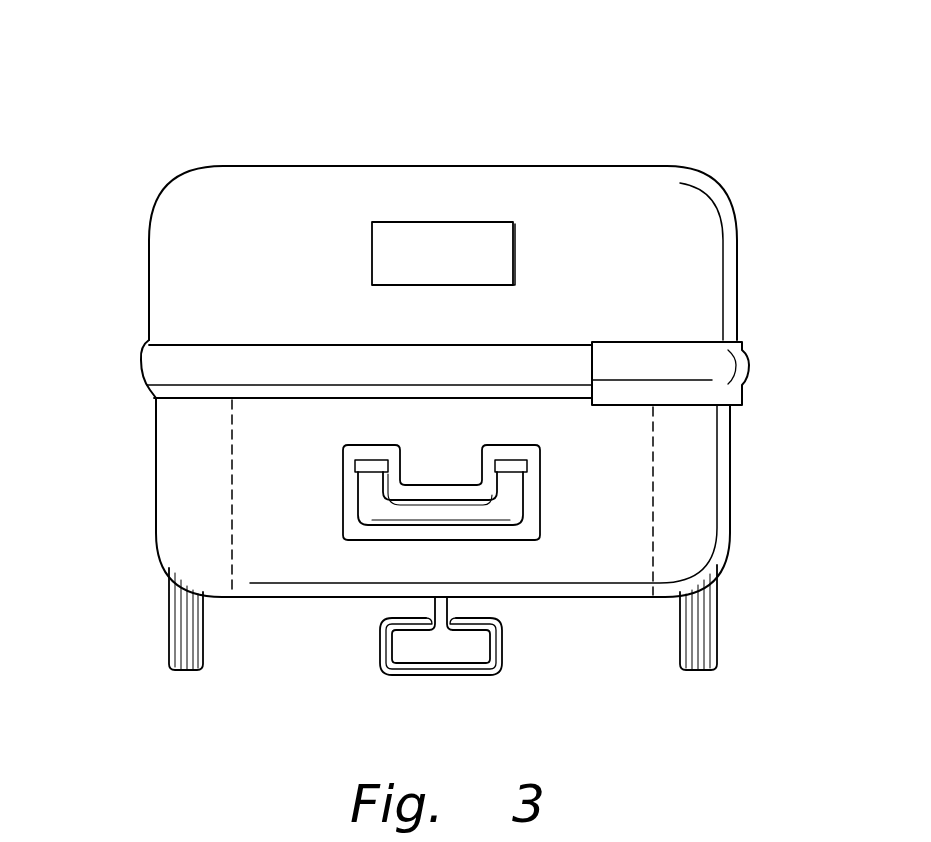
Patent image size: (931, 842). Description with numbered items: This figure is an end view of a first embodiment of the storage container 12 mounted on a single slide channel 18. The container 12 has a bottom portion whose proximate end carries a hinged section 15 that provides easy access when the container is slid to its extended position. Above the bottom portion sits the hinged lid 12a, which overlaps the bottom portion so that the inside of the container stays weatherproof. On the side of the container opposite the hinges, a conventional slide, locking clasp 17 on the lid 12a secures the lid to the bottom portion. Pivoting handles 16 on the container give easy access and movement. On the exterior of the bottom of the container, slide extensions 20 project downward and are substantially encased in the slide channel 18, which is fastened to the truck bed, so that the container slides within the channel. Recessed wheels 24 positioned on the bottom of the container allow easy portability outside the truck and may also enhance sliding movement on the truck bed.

The storage container 12 is at (145, 128).
The hinged lid 12a is at (580, 166).
The hinged section 15 is at (153, 478).
The pivoting handles 16 is at (513, 530).
The locking clasp 17 is at (744, 392).
The slide channel 18 is at (500, 662).
The slide extensions 20 is at (432, 603).
The recessed wheels 24 is at (168, 650).